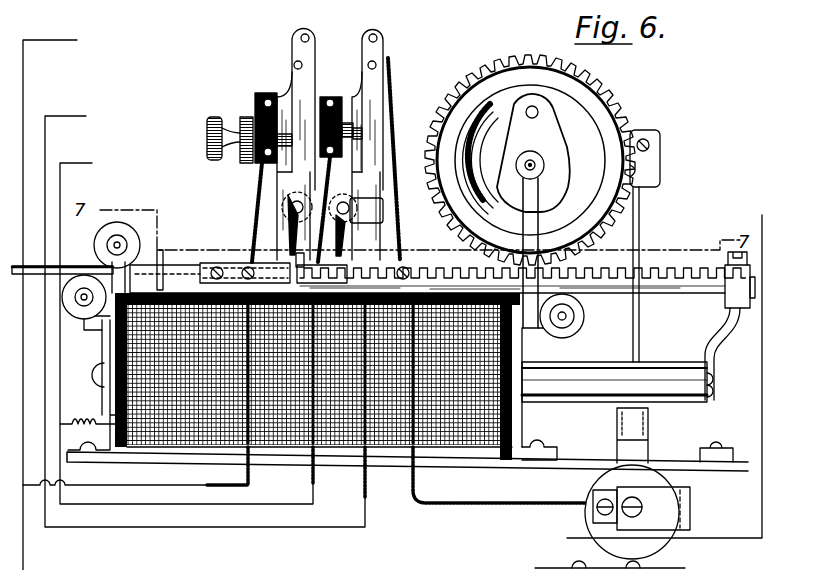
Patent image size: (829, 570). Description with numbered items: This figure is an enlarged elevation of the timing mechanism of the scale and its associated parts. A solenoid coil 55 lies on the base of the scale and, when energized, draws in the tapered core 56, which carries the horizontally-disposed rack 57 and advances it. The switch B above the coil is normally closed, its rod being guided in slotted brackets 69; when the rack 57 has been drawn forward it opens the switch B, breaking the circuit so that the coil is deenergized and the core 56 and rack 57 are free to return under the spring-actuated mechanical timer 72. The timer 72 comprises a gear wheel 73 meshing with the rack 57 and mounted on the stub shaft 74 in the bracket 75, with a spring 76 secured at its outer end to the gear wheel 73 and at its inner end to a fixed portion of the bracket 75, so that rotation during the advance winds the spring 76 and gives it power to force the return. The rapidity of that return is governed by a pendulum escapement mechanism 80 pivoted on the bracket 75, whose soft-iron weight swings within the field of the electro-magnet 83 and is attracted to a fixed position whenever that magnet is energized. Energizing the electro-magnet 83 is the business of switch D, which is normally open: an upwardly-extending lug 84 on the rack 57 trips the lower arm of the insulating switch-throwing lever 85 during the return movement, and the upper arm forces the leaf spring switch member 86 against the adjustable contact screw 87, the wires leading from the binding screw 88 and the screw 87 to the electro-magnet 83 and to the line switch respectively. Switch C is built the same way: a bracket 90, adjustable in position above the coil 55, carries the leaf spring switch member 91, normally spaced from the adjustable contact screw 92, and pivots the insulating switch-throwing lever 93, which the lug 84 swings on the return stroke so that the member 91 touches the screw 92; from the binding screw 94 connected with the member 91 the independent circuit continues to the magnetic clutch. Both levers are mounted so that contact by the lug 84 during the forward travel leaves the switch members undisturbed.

The solenoid coil 55 is at (380, 449).
The tapered core 56 is at (580, 370).
The rack 57 is at (640, 287).
The slotted brackets 69 is at (160, 252).
The mechanical timer 72 is at (565, 115).
The gear wheel 73 is at (620, 117).
The stub shaft 74 is at (538, 168).
The bracket 75 is at (553, 147).
The spring 76 is at (480, 138).
The pendulum escapement mechanism 80 is at (641, 223).
The electro-magnet 83 is at (592, 529).
The lug 84 is at (300, 266).
The switch-throwing lever 85 is at (343, 226).
The leaf spring switch member 86 is at (366, 152).
The adjustable contact screw 87 is at (350, 123).
The binding screw 88 is at (382, 35).
The bracket 90 is at (302, 53).
The leaf spring switch member 91 is at (297, 83).
The adjustable contact screw 92 is at (235, 133).
The switch-throwing lever 93 is at (290, 248).
The binding screw 94 is at (310, 35).
The switch B is at (290, 263).
The switch C is at (293, 65).
The switch D is at (368, 57).